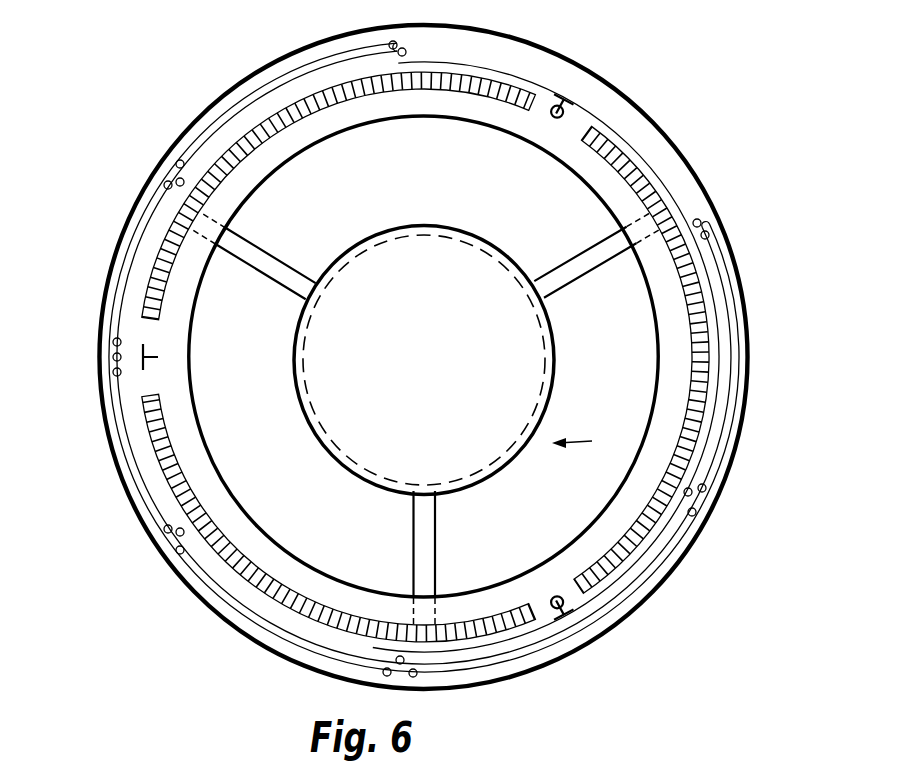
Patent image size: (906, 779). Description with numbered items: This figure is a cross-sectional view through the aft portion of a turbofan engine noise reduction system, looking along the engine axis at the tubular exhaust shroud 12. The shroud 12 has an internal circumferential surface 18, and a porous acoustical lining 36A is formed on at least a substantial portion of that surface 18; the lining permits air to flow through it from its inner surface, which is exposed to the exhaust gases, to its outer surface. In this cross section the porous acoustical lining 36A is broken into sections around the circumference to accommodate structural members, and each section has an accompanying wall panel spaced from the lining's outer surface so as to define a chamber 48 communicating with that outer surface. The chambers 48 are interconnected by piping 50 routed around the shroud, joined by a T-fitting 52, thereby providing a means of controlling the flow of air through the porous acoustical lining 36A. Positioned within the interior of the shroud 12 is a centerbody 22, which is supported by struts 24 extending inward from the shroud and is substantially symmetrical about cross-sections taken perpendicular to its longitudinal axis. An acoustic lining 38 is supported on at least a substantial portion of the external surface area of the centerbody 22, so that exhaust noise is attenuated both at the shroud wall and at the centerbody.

The exhaust shroud 12 is at (606, 101).
The internal circumferential surface 18 is at (549, 104).
The centerbody 22 is at (588, 443).
The struts 24 is at (306, 276).
The acoustical lining 36A is at (705, 410).
The acoustic lining 38 is at (428, 226).
The chamber 48 is at (158, 183).
The piping 50 is at (208, 130).
The T-fitting 52 is at (112, 352).